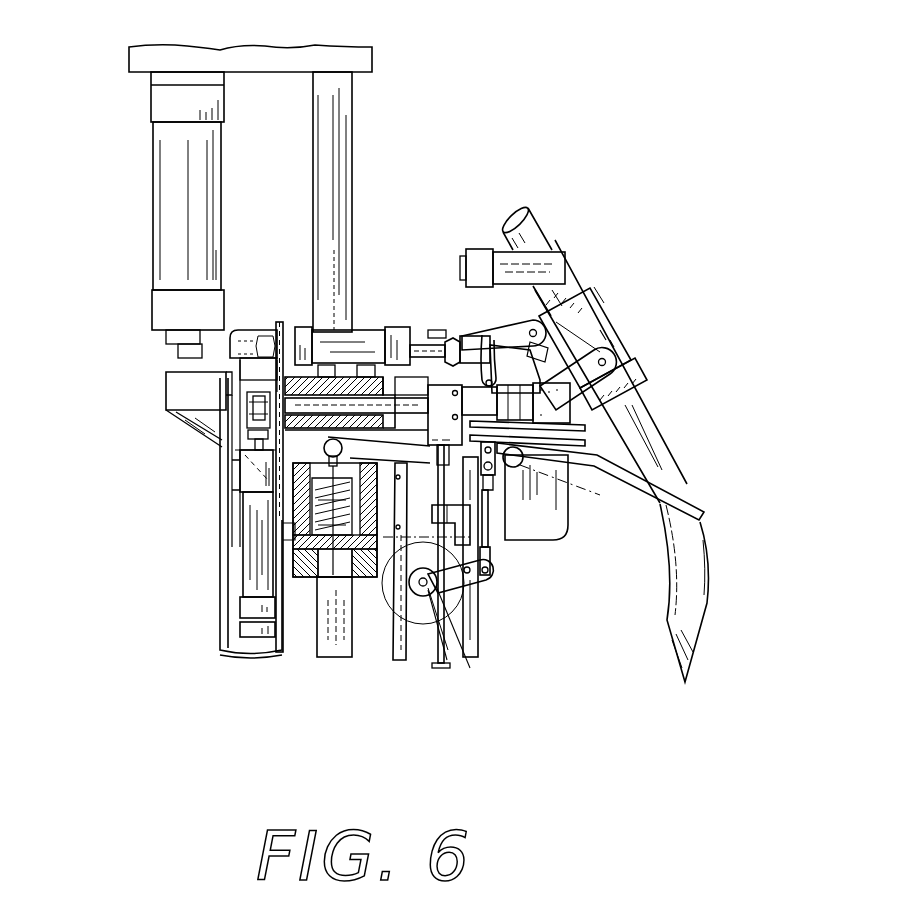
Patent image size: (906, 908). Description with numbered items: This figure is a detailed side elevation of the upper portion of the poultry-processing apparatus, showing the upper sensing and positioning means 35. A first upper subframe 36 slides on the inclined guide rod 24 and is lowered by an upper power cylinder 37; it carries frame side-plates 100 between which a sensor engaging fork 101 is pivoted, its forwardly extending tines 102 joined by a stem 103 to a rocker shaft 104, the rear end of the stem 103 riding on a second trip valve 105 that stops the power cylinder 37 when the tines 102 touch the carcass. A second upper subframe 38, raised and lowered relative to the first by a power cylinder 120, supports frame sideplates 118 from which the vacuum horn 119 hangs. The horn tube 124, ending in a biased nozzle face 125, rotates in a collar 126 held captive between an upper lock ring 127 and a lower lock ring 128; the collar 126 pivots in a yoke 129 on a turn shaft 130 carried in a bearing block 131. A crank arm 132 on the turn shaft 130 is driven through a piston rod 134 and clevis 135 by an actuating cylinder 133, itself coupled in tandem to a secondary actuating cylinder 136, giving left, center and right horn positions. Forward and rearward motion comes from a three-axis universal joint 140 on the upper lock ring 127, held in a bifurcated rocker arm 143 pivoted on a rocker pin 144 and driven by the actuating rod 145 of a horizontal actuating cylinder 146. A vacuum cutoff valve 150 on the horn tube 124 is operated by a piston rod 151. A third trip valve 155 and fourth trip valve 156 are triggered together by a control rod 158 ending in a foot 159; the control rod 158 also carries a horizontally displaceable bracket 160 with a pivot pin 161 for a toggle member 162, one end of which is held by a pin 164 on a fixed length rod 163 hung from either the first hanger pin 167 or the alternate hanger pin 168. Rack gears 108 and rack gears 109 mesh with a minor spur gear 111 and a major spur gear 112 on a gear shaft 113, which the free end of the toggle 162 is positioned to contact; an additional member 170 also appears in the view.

The guide rod 24 is at (356, 128).
The upper power cylinder 37 is at (150, 300).
The first upper subframe 36 is at (168, 392).
The crank arm 132 is at (247, 398).
The clevis 135 is at (240, 430).
The piston rod 134 is at (240, 445).
The second trip valve 105 is at (242, 458).
The actuating cylinder 133 is at (243, 470).
The power cylinder 120 is at (220, 527).
The secondary actuating cylinder 136 is at (240, 620).
The actuating cylinder 146 is at (332, 330).
The bearing block 131 is at (358, 328).
The turn shaft 130 is at (388, 328).
The actuating rod 145 is at (437, 330).
The piston rod 151 is at (462, 245).
The vacuum cutoff valve 150 is at (548, 235).
The three-axis universal joint 140 is at (578, 290).
The upper lock ring 127 is at (600, 302).
The collar 126 is at (640, 335).
The yoke 129 is at (605, 372).
The lower lock ring 128 is at (625, 398).
The bifurcated rocker arm 143 is at (466, 359).
The rocker pin 144 is at (488, 340).
The frame sideplates 118 is at (506, 383).
The third trip valve 155 is at (445, 415).
The fourth trip valve 156 is at (452, 431).
The second upper subframe 38 is at (650, 403).
The alternate hanger pin 168 is at (550, 425).
The first hanger pin 167 is at (548, 440).
The vacuum horn 119 is at (680, 468).
The tines 102 is at (700, 492).
The upper sensing and positioning means 35 is at (708, 517).
The rocker shaft 104 is at (525, 462).
The horn tube 124 is at (707, 553).
The frame side-plates 100 is at (538, 526).
The lever 170 is at (433, 470).
The sensor engaging fork 101 is at (619, 478).
The fixed length rod 163 is at (503, 530).
The horizontally displaceable bracket 160 is at (493, 538).
The pin 164 is at (490, 578).
The pivot pin 161 is at (478, 598).
The toggle member 162 is at (440, 592).
The control rod 158 is at (445, 612).
The rack gears 109 is at (481, 632).
The minor spur gear 111 is at (462, 642).
The major spur gear 112 is at (447, 665).
The gear shaft 113 is at (432, 665).
The foot 159 is at (444, 672).
The stem 103 is at (352, 655).
The rack gears 108 is at (390, 642).
The nozzle face 125 is at (668, 648).